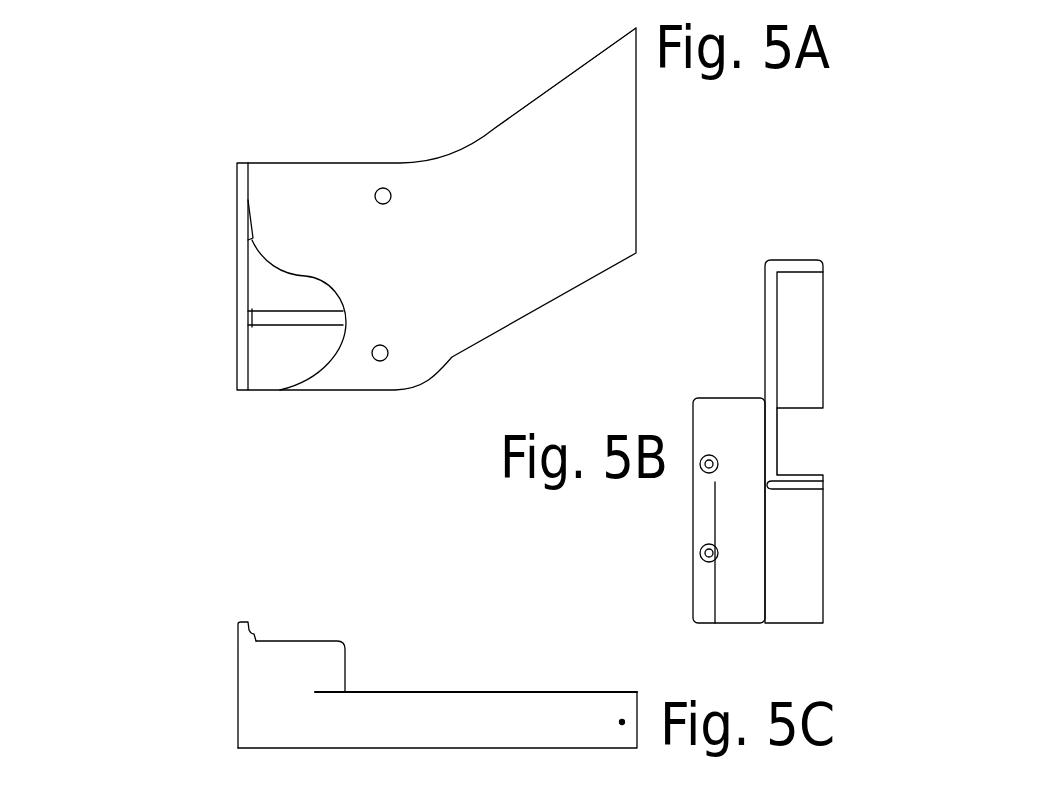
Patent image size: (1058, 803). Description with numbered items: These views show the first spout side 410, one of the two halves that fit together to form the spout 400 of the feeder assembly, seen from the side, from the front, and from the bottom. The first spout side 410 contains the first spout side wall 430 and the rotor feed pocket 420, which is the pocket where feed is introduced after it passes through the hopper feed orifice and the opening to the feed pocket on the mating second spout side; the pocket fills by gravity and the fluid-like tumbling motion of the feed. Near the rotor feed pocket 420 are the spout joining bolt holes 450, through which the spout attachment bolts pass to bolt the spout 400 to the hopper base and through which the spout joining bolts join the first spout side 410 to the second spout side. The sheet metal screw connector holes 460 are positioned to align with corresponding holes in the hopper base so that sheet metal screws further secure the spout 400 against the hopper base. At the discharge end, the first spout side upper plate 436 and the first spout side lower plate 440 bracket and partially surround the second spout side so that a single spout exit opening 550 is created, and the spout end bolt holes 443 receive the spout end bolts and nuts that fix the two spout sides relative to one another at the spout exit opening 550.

In FIG. 5C, the spout 400 is at (405, 728).
In FIG. 5A, the first spout side 410 is at (531, 281).
In FIG. 5B, the first spout side 410 is at (793, 615).
In FIG. 5C, the first spout side 410 is at (295, 728).
In FIG. 5A, the rotor feed pocket 420 is at (268, 362).
In FIG. 5C, the rotor feed pocket 420 is at (336, 662).
In FIG. 5A, the first spout side wall 430 is at (596, 206).
In FIG. 5B, the first spout side upper plate 436 is at (823, 266).
In FIG. 5B, the first spout side lower plate 440 is at (810, 585).
In FIG. 5C, the first spout side lower plate 440 is at (462, 728).
In FIG. 5B, the spout end bolt holes 443 is at (796, 283).
In FIG. 5C, the spout end bolt holes 443 is at (622, 722).
In FIG. 5A, the spout joining bolt holes 450 is at (378, 345).
In FIG. 5B, the sheet metal screw connector holes 460 is at (699, 548).
In FIG. 5B, the spout exit opening 550 is at (800, 448).